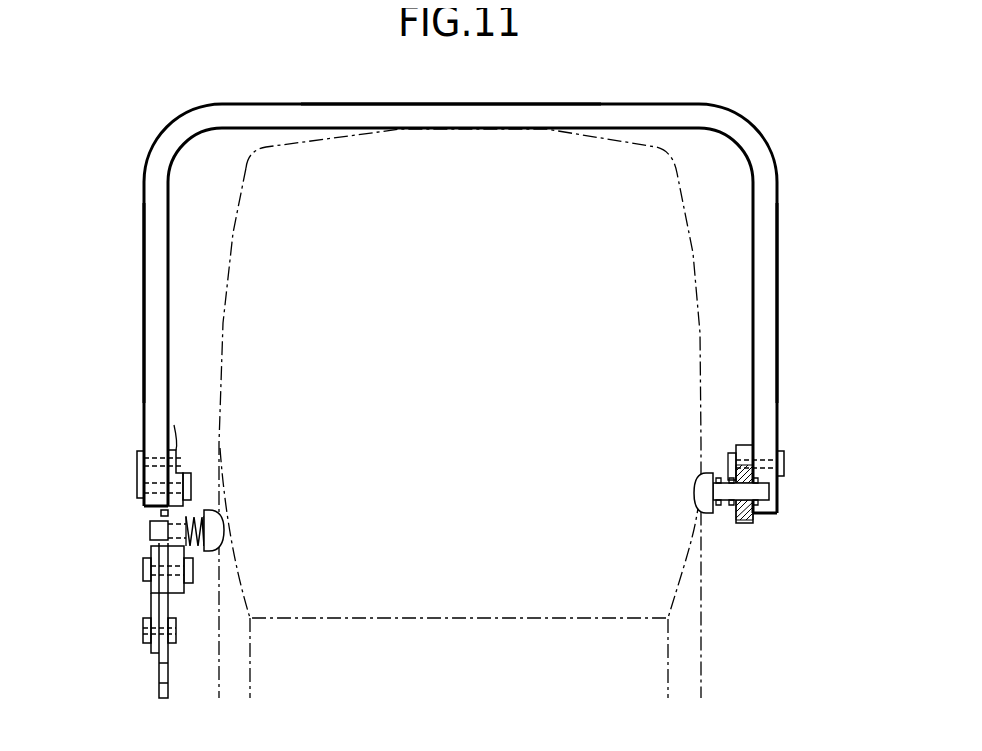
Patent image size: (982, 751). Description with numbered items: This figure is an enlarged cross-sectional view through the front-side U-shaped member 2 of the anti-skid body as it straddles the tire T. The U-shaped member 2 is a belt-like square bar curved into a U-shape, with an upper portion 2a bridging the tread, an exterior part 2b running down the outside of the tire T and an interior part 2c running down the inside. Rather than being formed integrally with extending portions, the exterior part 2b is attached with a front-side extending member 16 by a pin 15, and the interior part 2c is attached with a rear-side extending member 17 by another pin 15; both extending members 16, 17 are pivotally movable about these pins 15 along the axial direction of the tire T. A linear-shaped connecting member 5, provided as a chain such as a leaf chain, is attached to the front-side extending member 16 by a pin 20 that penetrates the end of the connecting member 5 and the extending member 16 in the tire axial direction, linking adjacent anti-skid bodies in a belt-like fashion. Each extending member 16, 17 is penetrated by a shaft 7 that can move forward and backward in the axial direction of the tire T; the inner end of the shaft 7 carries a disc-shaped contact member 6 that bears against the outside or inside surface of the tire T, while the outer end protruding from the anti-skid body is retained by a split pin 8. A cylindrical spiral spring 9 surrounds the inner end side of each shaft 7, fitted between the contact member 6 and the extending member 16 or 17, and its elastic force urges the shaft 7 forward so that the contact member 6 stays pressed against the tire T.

The front-side U-shaped member 2 is at (268, 80).
The frame upper portion 2a is at (578, 101).
The exterior part 2b is at (143, 205).
The interior part 2c is at (777, 220).
The tire T is at (245, 163).
The linear-shaped connecting member 5 is at (158, 683).
The contact member 6 is at (223, 537).
The shaft 7 is at (149, 525).
The split pin 8 is at (160, 538).
The spiral spring 9 is at (197, 545).
The pin 15 is at (137, 482).
The front-side extending member 16 is at (173, 422).
The rear-side extending member 17 is at (743, 442).
The pin 20 is at (142, 573).